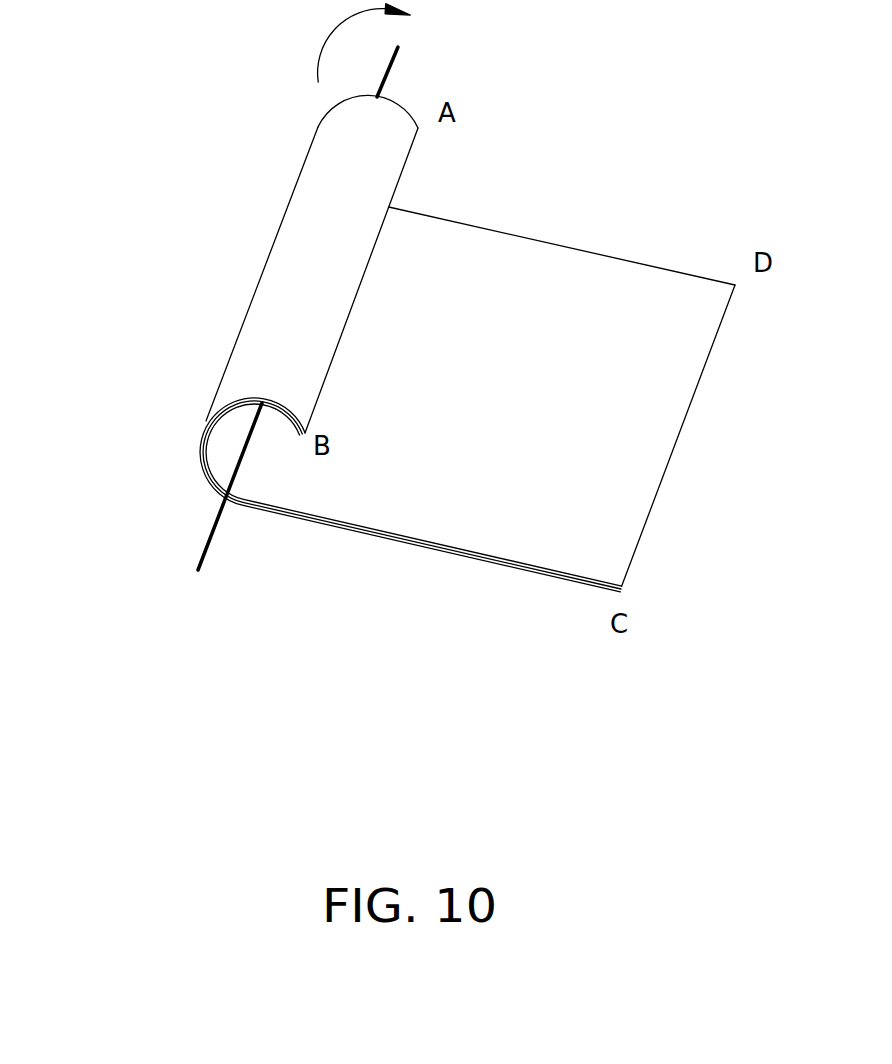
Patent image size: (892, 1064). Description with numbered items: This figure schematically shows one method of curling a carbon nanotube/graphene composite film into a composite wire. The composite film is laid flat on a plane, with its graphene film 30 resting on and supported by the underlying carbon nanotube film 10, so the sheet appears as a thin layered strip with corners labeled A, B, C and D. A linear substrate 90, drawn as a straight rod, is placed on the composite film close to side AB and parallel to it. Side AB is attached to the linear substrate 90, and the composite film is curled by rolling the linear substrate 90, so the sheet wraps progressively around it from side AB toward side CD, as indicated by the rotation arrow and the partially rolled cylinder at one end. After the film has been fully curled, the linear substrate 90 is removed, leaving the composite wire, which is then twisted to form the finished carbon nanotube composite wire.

The linear substrate 90 is at (207, 533).
The graphene film 30 is at (349, 533).
The carbon nanotube film 10 is at (433, 550).